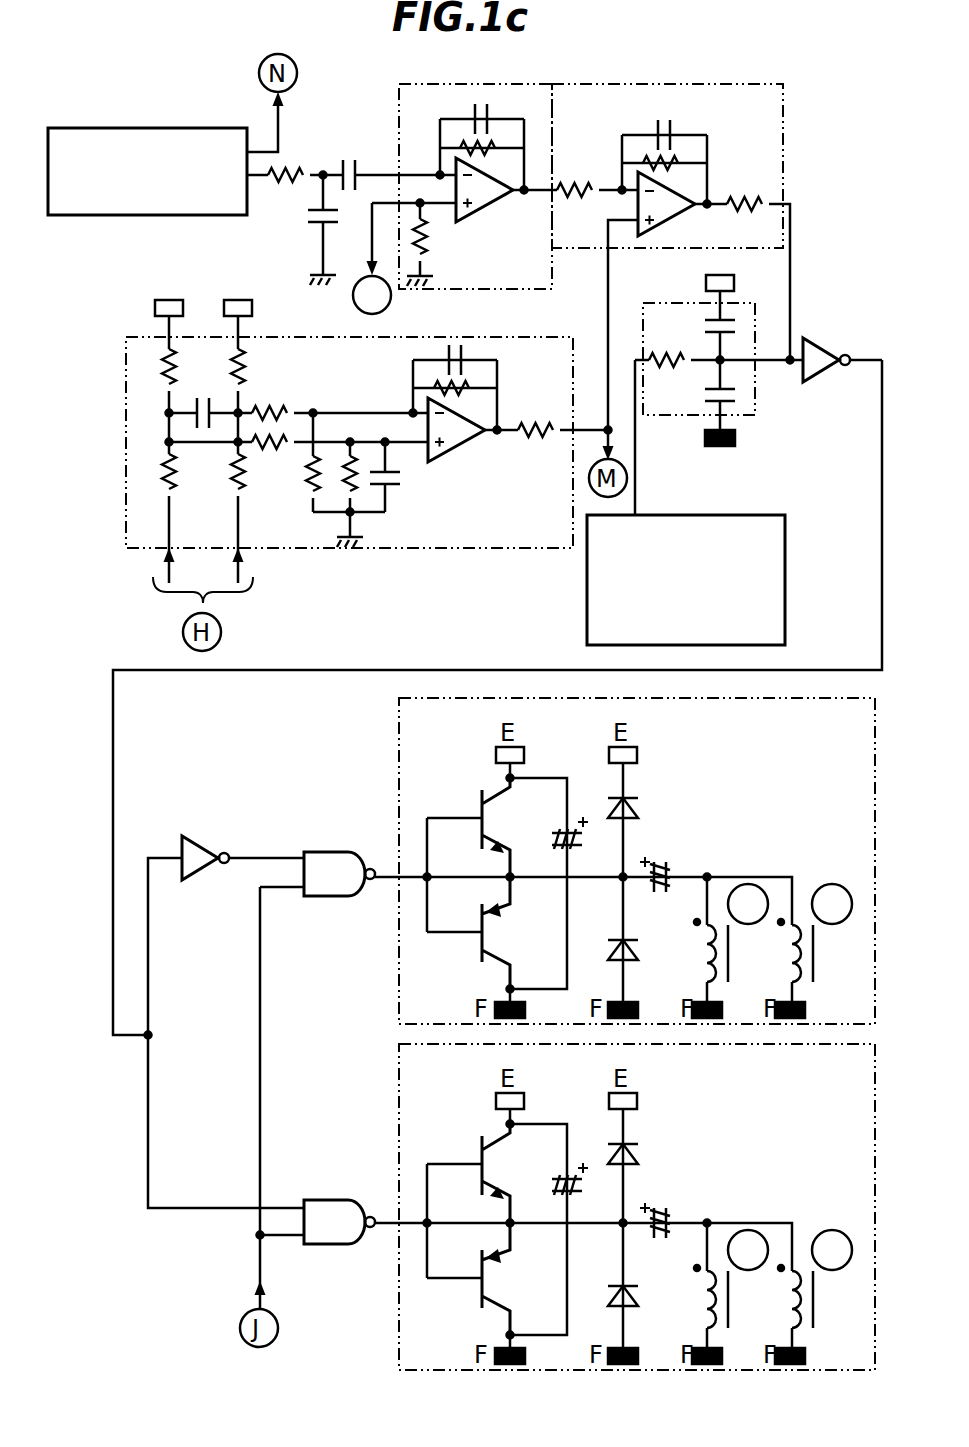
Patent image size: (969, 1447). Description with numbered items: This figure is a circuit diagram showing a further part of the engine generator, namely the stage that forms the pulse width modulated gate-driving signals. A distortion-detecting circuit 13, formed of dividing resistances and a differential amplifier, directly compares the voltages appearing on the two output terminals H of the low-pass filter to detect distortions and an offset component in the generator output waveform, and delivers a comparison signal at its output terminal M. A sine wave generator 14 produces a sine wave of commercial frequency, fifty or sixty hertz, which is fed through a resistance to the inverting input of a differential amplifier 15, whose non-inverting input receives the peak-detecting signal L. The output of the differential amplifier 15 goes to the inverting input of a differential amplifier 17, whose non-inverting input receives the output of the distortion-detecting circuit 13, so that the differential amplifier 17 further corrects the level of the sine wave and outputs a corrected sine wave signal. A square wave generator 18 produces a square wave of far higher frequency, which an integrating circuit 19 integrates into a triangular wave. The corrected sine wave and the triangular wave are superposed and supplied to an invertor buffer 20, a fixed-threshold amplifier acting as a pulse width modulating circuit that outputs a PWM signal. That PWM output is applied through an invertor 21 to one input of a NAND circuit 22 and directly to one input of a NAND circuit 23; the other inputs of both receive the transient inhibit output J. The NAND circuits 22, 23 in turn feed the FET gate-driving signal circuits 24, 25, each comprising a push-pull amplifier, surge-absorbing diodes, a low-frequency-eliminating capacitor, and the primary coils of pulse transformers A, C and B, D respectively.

The distortion-detecting circuit 13 is at (480, 338).
The sine wave generator 14 is at (142, 128).
The differential amplifier 15 is at (397, 142).
The differential amplifier 17 is at (788, 118).
The square wave generator 18 is at (785, 578).
The integrating circuit 19 is at (758, 409).
The invertor buffer 20 is at (808, 382).
The invertor 21 is at (207, 837).
The NAND circuit 22 is at (333, 852).
The NAND circuit 23 is at (333, 1200).
The FET gate-driving signal circuit 24 is at (597, 861).
The FET gate-driving signal circuit 25 is at (597, 1207).